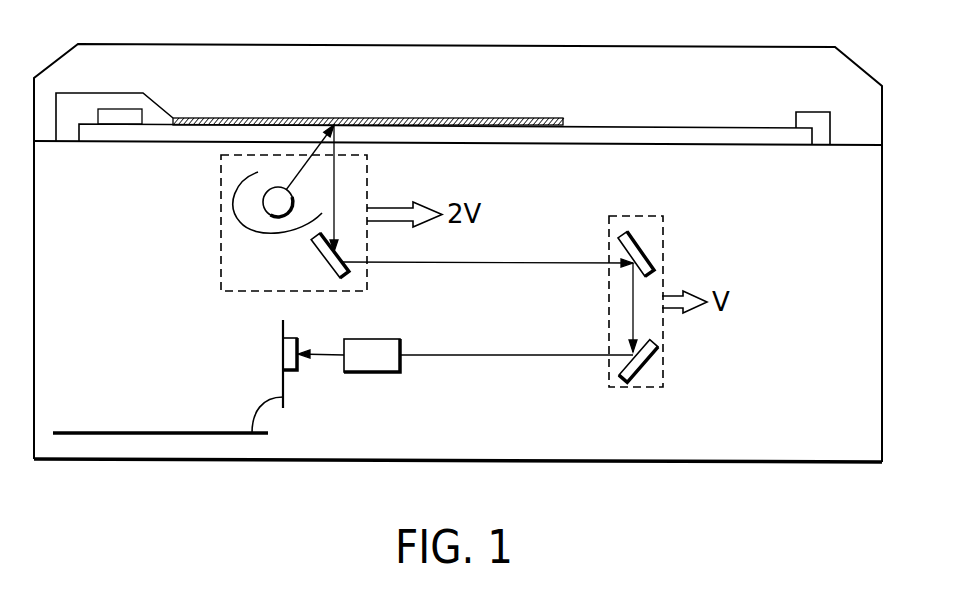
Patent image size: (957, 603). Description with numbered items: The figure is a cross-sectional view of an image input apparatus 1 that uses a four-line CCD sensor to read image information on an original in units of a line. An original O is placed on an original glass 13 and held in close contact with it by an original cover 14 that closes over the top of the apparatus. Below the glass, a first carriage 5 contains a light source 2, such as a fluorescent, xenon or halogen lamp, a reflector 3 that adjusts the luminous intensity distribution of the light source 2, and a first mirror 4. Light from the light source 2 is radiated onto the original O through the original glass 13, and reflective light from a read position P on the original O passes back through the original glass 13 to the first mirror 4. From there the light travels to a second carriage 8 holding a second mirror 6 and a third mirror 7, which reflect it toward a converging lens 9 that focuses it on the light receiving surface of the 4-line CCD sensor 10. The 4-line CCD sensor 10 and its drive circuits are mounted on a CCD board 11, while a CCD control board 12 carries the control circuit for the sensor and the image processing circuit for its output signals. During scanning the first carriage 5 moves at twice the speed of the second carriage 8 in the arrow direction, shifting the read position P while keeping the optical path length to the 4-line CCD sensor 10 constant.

The image input apparatus 1 is at (779, 466).
The light source 2 is at (273, 202).
The reflector 3 is at (259, 237).
The first mirror 4 is at (317, 247).
The first carriage 5 is at (367, 160).
The second mirror 6 is at (647, 253).
The third mirror 7 is at (647, 357).
The second carriage 8 is at (634, 216).
The converging lens 9 is at (385, 339).
The 4-line CCD sensor 10 is at (283, 353).
The CCD board 11 is at (283, 385).
The CCD control board 12 is at (163, 433).
The original glass 13 is at (741, 128).
The original cover 14 is at (437, 45).
The read position P is at (341, 115).
The original O is at (513, 119).